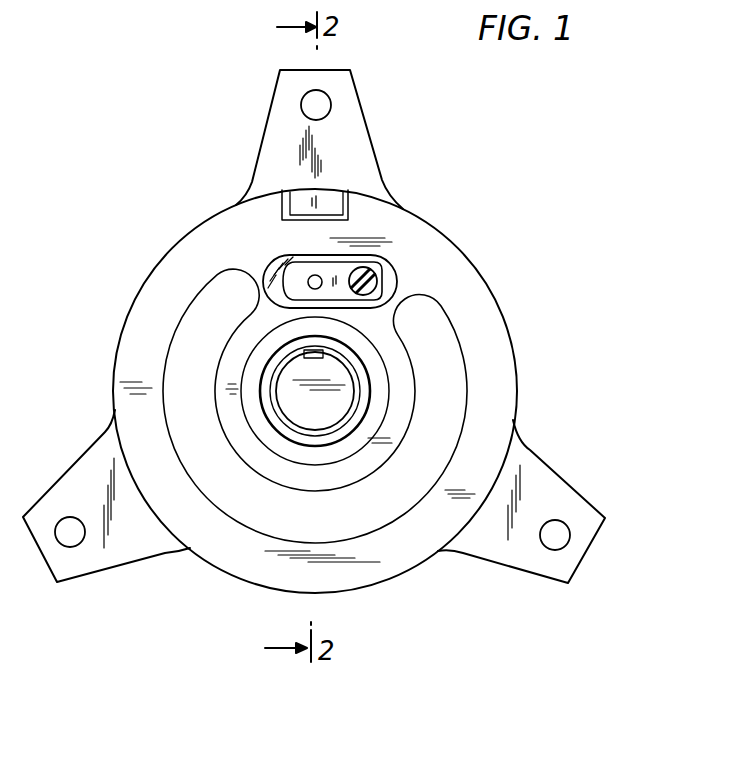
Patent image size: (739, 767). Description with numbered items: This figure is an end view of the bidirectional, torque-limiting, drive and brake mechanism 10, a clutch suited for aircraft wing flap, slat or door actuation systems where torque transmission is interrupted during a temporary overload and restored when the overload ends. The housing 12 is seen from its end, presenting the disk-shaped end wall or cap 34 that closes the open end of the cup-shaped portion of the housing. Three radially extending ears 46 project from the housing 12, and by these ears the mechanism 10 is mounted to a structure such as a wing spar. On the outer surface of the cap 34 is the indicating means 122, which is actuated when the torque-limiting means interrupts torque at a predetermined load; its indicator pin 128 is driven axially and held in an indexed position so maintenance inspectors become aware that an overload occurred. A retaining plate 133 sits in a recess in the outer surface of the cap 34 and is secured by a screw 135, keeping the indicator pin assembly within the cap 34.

The bidirectional, torque-limiting, drive and brake mechanism 10 is at (481, 173).
The housing 12 is at (489, 285).
The cap 34 is at (503, 366).
The ears 46 is at (357, 135).
The indicating means 122 is at (383, 252).
The indicator pin 128 is at (307, 284).
The retaining plate 133 is at (313, 264).
The screw 135 is at (374, 280).